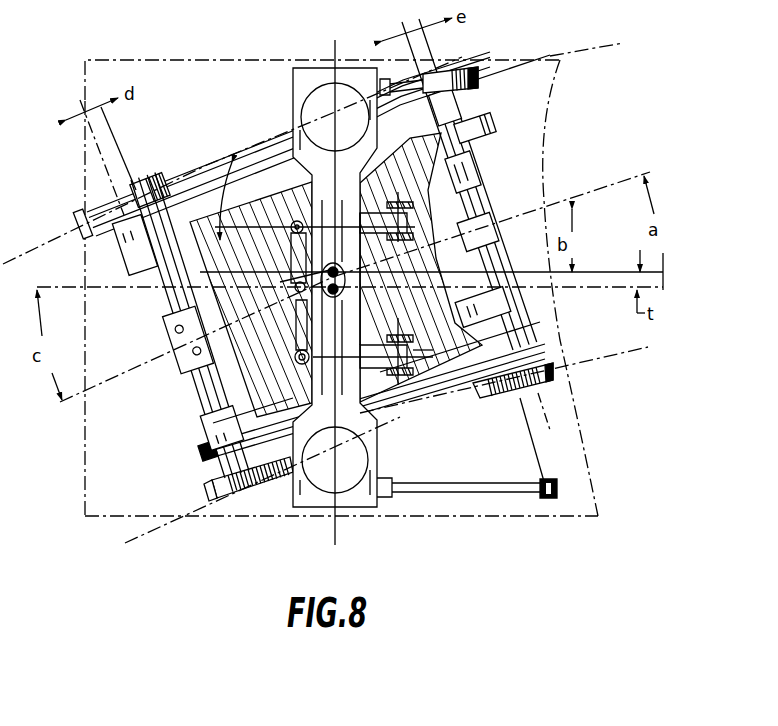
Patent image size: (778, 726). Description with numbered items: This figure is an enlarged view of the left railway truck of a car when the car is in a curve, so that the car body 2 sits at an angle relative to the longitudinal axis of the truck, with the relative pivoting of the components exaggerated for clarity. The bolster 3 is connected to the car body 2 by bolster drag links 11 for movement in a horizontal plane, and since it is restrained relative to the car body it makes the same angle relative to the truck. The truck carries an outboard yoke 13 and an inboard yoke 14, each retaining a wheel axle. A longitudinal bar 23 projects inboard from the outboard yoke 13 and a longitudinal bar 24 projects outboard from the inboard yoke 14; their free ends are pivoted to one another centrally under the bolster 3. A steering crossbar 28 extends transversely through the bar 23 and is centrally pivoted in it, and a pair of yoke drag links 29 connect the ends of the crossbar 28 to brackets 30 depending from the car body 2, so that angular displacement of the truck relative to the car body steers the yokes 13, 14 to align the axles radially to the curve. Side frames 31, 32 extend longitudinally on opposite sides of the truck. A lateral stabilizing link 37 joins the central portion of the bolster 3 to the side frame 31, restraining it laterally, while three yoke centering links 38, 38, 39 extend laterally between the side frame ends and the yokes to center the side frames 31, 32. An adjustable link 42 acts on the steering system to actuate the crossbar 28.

The car body 2 is at (118, 58).
The bolster 3 is at (318, 60).
The bolster drag link 11 is at (407, 80).
The outboard yoke 13 is at (213, 392).
The inboard yoke 14 is at (450, 300).
The longitudinal bar 23 is at (296, 286).
The longitudinal bar 24 is at (400, 274).
The steering crossbar 28 is at (293, 240).
The yoke drag link 29 is at (352, 218).
The bracket 30 is at (410, 378).
The side frame 31 is at (265, 180).
The side frame 32 is at (392, 405).
The lateral stabilizing link 37 is at (300, 193).
The yoke centering link 38 is at (165, 300).
The yoke centering link 39 is at (462, 171).
The adjustable link 42 is at (297, 335).